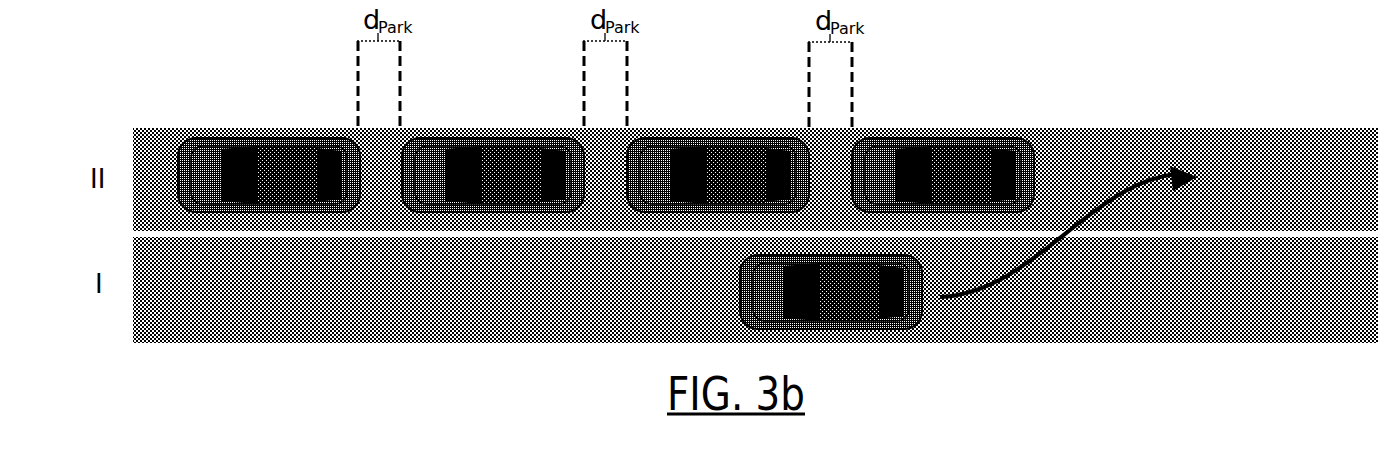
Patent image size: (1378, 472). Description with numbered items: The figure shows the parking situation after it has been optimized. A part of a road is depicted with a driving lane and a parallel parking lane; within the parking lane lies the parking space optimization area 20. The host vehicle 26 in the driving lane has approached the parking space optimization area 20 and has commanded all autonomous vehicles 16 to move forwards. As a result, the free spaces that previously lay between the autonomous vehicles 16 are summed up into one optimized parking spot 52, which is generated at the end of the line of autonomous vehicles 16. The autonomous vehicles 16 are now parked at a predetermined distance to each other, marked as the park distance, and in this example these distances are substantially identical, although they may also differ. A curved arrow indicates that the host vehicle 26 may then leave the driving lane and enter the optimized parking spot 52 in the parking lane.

The parking space optimization area 20 is at (150, 114).
The autonomous vehicles 16 is at (292, 160).
The optimized parking spot 52 is at (1265, 160).
The host vehicle 26 is at (860, 297).